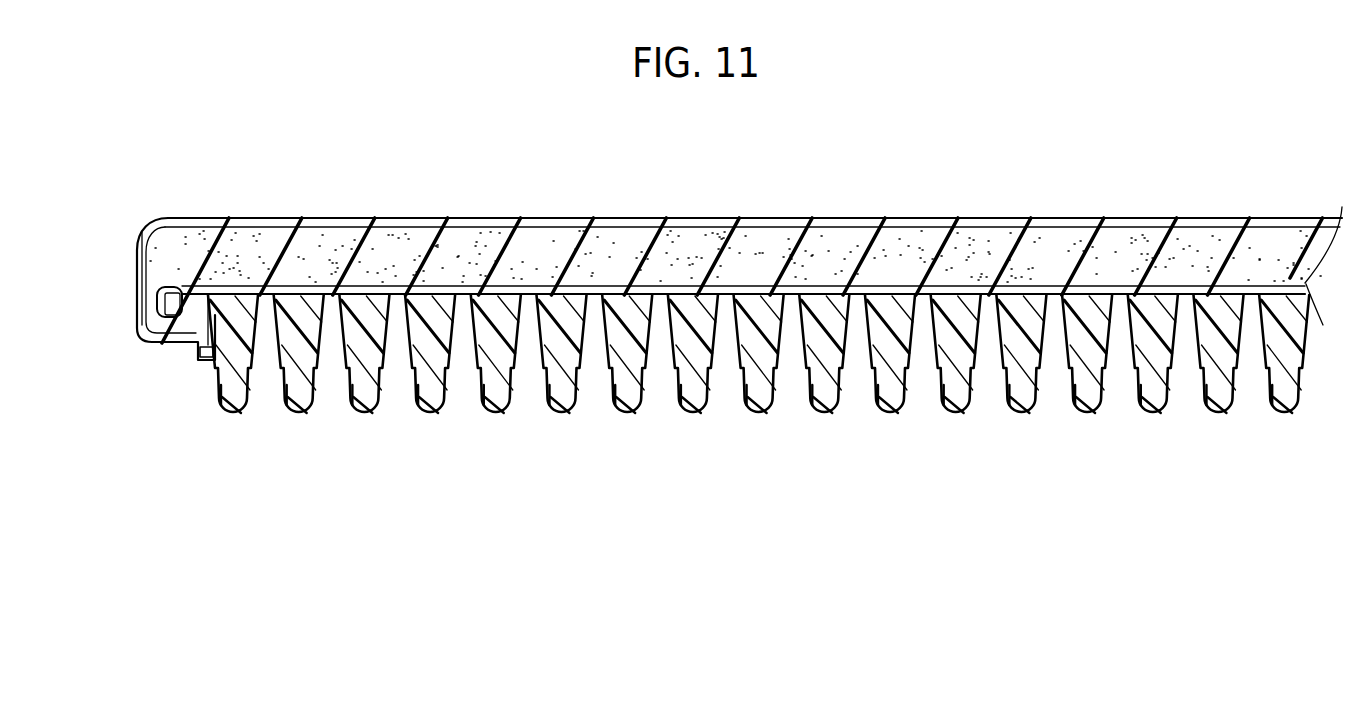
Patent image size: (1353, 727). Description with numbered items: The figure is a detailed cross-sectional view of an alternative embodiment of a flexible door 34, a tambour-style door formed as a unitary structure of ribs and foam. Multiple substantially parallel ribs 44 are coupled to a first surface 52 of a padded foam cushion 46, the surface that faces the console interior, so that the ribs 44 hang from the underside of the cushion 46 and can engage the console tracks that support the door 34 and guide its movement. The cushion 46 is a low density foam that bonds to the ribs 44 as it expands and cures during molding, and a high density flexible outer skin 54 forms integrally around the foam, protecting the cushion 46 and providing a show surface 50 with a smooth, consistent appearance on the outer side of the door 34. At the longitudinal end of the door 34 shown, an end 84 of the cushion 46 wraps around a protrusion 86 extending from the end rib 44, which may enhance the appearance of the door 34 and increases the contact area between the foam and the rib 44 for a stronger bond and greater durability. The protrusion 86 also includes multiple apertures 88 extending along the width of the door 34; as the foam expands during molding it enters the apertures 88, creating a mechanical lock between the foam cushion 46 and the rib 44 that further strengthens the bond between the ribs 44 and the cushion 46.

The flexible door 34 is at (968, 112).
The ribs 44 is at (762, 413).
The cushion 46 is at (840, 240).
The show surface 50 is at (423, 218).
The first surface 52 is at (531, 297).
The outer skin 54 is at (340, 220).
The end 84 is at (135, 348).
The protrusion 86 is at (170, 303).
The apertures 88 is at (195, 312).